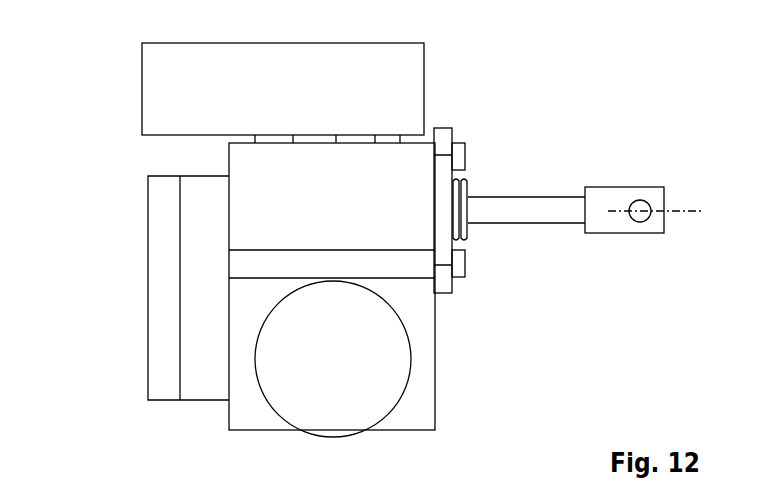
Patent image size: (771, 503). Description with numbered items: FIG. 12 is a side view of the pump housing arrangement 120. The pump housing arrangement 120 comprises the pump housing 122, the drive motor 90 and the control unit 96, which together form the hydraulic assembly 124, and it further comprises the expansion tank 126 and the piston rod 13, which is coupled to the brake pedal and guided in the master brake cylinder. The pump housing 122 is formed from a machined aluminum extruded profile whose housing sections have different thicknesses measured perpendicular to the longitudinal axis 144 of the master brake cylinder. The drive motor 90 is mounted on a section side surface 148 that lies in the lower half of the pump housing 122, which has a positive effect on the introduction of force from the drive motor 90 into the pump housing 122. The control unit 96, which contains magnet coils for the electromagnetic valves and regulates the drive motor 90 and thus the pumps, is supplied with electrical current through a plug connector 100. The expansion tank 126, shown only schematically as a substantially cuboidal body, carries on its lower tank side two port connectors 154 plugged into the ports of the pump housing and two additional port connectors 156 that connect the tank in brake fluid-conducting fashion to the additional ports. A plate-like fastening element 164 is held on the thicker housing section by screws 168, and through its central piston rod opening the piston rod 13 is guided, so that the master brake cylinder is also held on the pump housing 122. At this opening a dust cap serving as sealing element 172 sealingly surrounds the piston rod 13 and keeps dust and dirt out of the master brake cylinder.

The pump housing arrangement 120 is at (112, 86).
The expansion tank 126 is at (414, 68).
The port connectors 154 is at (277, 135).
The additional port connectors 156 is at (388, 133).
The fastening element 164 is at (443, 136).
The screws 168 is at (456, 160).
The sealing element 172 is at (466, 190).
The piston rod 13 is at (558, 203).
The longitudinal axis 144 is at (691, 207).
The plug connector 100 is at (198, 245).
The control unit 96 is at (160, 275).
The pump housing 122 is at (423, 318).
The hydraulic assembly 124 is at (458, 356).
The drive motor 90 is at (395, 378).
The section side surface 148 is at (415, 403).